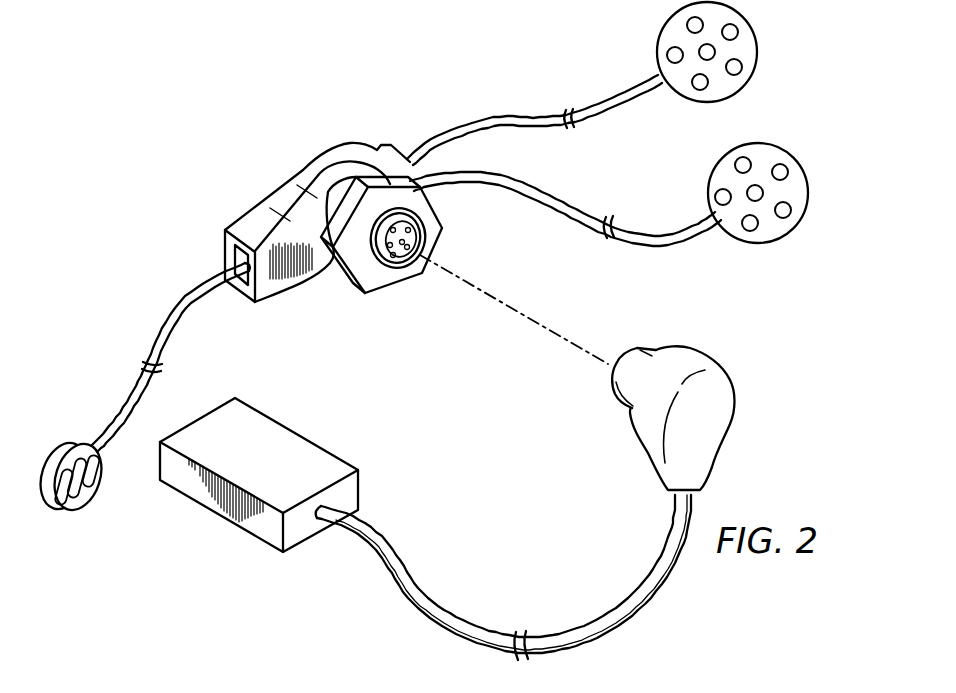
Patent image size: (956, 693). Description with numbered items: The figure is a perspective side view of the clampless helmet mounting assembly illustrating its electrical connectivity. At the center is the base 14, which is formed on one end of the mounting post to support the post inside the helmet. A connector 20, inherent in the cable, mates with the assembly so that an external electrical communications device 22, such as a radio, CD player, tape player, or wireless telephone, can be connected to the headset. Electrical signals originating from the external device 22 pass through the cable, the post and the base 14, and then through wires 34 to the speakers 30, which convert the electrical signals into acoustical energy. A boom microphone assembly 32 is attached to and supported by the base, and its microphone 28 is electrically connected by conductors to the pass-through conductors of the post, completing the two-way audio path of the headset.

The base 14 is at (314, 252).
The connector 20 is at (722, 364).
The external electrical communications device 22 is at (253, 533).
The microphone 28 is at (73, 443).
The speakers 30 is at (753, 28).
The boom microphone assembly 32 is at (166, 320).
The wires 34 is at (620, 105).